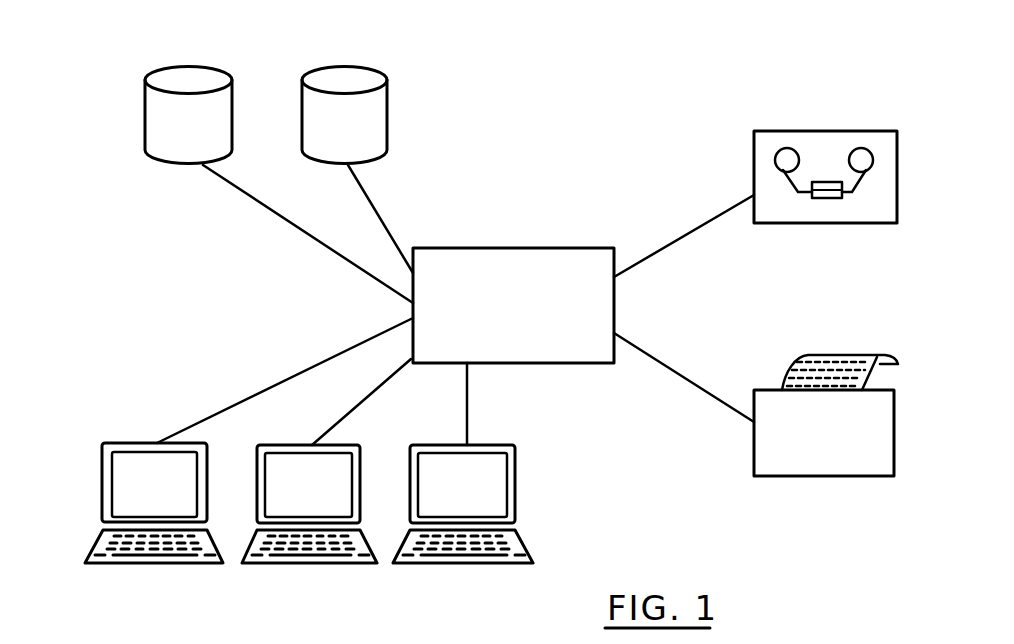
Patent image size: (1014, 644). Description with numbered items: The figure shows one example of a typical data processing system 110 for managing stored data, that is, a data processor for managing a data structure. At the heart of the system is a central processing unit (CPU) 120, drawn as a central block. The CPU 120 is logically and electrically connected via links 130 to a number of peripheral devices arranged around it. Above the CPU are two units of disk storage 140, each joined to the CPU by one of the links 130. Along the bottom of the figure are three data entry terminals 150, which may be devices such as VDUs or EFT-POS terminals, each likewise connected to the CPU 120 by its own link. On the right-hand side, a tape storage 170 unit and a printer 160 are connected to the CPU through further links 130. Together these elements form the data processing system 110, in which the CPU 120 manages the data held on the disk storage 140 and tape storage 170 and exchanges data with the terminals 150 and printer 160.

The data processing system 110 is at (112, 66).
The central processing unit (CPU) 120 is at (567, 248).
The links 130 is at (348, 263).
The disk storage 140 is at (310, 69).
The data entry terminals 150 is at (542, 573).
The printer 160 is at (840, 477).
The tape storage 170 is at (830, 131).